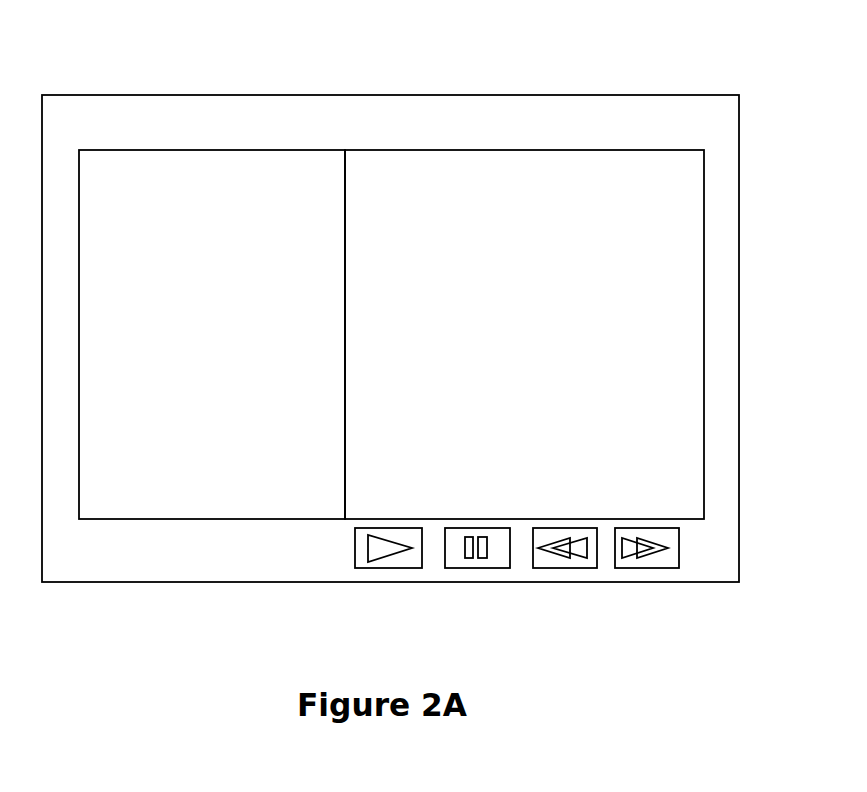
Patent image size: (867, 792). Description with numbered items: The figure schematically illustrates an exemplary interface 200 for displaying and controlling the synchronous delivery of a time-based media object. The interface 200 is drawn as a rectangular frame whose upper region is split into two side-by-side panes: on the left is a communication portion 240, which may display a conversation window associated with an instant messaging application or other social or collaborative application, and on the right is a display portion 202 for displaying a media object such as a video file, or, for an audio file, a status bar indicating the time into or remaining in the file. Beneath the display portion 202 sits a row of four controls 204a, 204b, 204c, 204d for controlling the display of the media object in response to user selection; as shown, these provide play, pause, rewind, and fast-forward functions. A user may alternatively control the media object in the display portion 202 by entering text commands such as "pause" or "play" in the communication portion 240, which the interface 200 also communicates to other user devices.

The interface 200 is at (419, 95).
The communication portion 240 is at (202, 148).
The display portion 202 is at (627, 148).
The control 204a is at (400, 568).
The control 204b is at (457, 568).
The control 204c is at (553, 568).
The control 204d is at (657, 568).